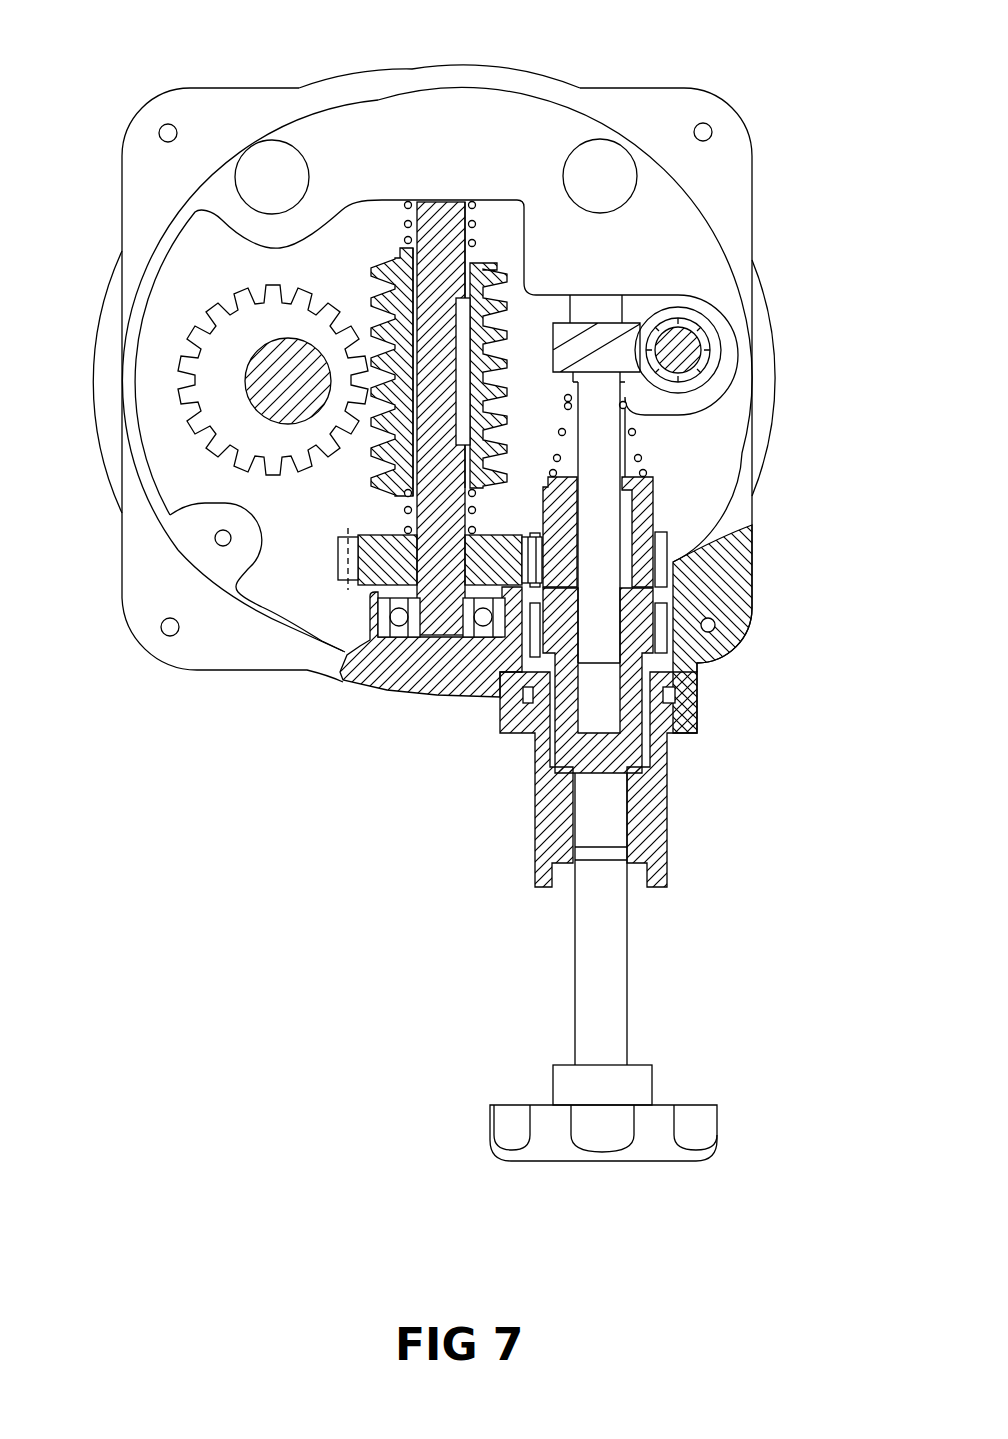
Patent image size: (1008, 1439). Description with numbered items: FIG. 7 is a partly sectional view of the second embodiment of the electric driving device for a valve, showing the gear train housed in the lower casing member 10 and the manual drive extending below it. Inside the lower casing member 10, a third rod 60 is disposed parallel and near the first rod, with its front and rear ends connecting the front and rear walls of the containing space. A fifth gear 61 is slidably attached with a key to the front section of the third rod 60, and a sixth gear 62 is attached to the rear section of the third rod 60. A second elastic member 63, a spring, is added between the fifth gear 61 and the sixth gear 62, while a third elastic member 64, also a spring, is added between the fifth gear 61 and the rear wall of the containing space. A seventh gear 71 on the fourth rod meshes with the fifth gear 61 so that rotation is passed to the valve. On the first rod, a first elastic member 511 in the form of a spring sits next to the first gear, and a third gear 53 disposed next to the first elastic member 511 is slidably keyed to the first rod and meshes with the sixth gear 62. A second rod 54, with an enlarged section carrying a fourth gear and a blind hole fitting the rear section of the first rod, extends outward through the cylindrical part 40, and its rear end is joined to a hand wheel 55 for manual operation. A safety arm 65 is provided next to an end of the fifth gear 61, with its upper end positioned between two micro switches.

The lower casing member 10 is at (800, 283).
The seventh gear 71 is at (223, 352).
The third elastic member 64 is at (395, 206).
The safety arm 65 is at (496, 268).
The fifth gear 61 is at (500, 333).
The first elastic member 511 is at (632, 432).
The third gear 53 is at (645, 548).
The sixth gear 62 is at (365, 563).
The second elastic member 63 is at (400, 512).
The third rod 60 is at (437, 645).
The cylindrical part 40 is at (668, 768).
The second rod 54 is at (609, 988).
The hand wheel 55 is at (708, 1114).